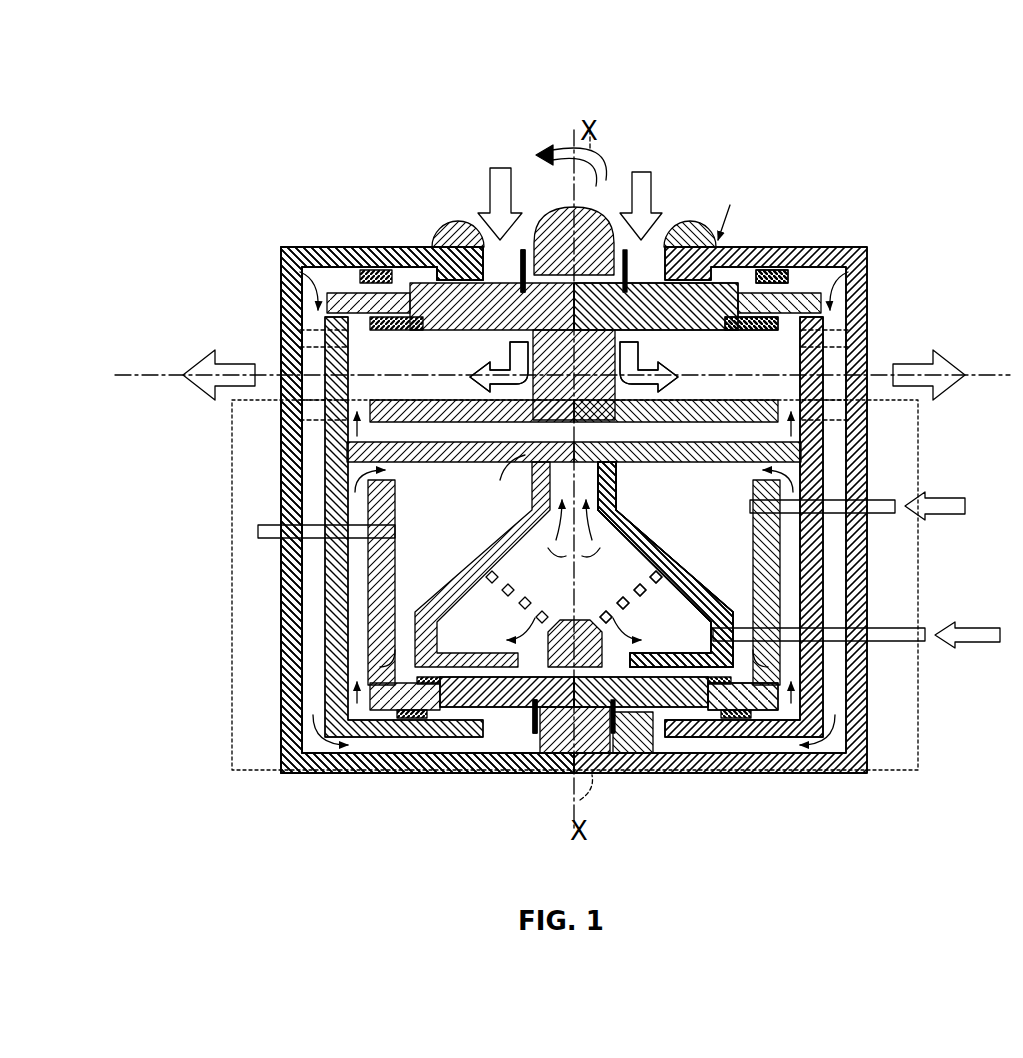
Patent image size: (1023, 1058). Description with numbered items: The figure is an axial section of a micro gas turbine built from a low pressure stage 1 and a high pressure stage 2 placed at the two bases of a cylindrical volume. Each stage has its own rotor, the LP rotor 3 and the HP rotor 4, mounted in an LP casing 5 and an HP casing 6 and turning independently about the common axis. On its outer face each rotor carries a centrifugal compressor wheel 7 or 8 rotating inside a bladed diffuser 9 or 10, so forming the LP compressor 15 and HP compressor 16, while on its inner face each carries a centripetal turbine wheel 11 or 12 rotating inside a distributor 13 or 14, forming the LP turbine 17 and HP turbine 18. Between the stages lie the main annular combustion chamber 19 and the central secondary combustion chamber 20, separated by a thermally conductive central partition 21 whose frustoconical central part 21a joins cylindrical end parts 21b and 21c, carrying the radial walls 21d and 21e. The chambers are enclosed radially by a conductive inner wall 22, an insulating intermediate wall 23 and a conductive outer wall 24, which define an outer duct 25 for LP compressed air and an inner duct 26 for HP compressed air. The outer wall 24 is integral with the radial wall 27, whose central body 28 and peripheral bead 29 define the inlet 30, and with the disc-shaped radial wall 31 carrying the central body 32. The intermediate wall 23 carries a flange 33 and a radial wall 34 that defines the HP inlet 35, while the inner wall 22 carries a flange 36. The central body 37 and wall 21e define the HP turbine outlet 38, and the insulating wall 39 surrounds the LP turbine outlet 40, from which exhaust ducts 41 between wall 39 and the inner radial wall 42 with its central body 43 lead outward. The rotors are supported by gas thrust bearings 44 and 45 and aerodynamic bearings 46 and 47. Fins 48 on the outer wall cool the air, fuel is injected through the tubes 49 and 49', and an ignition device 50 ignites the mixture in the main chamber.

The low pressure stage 1 is at (393, 136).
The high pressure stage 2 is at (453, 795).
The LP rotor 3 is at (644, 312).
The HP rotor 4 is at (503, 768).
The LP casing 5 is at (722, 240).
The HP casing 6 is at (675, 670).
The LP centrifugal compressor wheel 7 is at (748, 280).
The HP centrifugal compressor wheel 8 is at (708, 705).
The LP centrifugal diffuser 9 is at (790, 280).
The HP centrifugal diffuser 10 is at (740, 705).
The LP centripetal turbine wheel 11 is at (395, 298).
The HP centripetal turbine wheel 12 is at (420, 700).
The LP centripetal annular distributor 13 is at (345, 256).
The HP centripetal annular distributor 14 is at (325, 715).
The LP centrifugal compressor 15 is at (488, 262).
The HP centrifugal compressor 16 is at (650, 705).
The LP centripetal turbine 17 is at (696, 238).
The HP centripetal turbine 18 is at (562, 750).
The main annular combustion chamber 19 is at (440, 528).
The secondary combustion chamber 20 is at (542, 573).
The central partition 21 is at (735, 560).
The frustoconical central part 21a is at (660, 555).
The cylindrical axial end part 21b is at (610, 480).
The cylindrical axial end part 21c is at (436, 605).
The annular radial wall 21d is at (758, 482).
The annular radial wall 21e is at (738, 565).
The inner cylindrical wall 22 is at (772, 624).
The intermediate cylindrical wall 23 is at (812, 578).
The outer cylindrical wall 24 is at (860, 523).
The outer annular duct 25 is at (300, 626).
The inner annular duct 26 is at (365, 572).
The annular radial wall 27 is at (375, 282).
The central body 28 is at (590, 215).
The peripheral bead 29 is at (455, 238).
The axial annular inlet 30 is at (523, 262).
The radial wall 31 is at (445, 690).
The central body 32 is at (600, 700).
The annular radial flange 33 is at (780, 292).
The annular radial wall 34 is at (790, 740).
The axial annular inlet 35 is at (490, 705).
The annular radial flange 36 is at (395, 712).
The central body 37 is at (578, 622).
The axial annular outlet 38 is at (612, 620).
The annular radial wall 39 is at (770, 326).
The axial annular outlet 40 is at (510, 322).
The exhaust ducts 41 is at (360, 368).
The inner radial wall 42 is at (428, 436).
The inner central body 43 is at (650, 444).
The gas thrust bearings 44 is at (585, 327).
The gas thrust bearings 45 is at (612, 700).
The aerodynamic bearing 46 is at (664, 212).
The aerodynamic bearing 47 is at (535, 718).
The fins 48 is at (240, 510).
The radial fuel supply tube 49 is at (861, 495).
The radial fuel supply tube 49' is at (856, 651).
The ignition device 50 is at (262, 532).